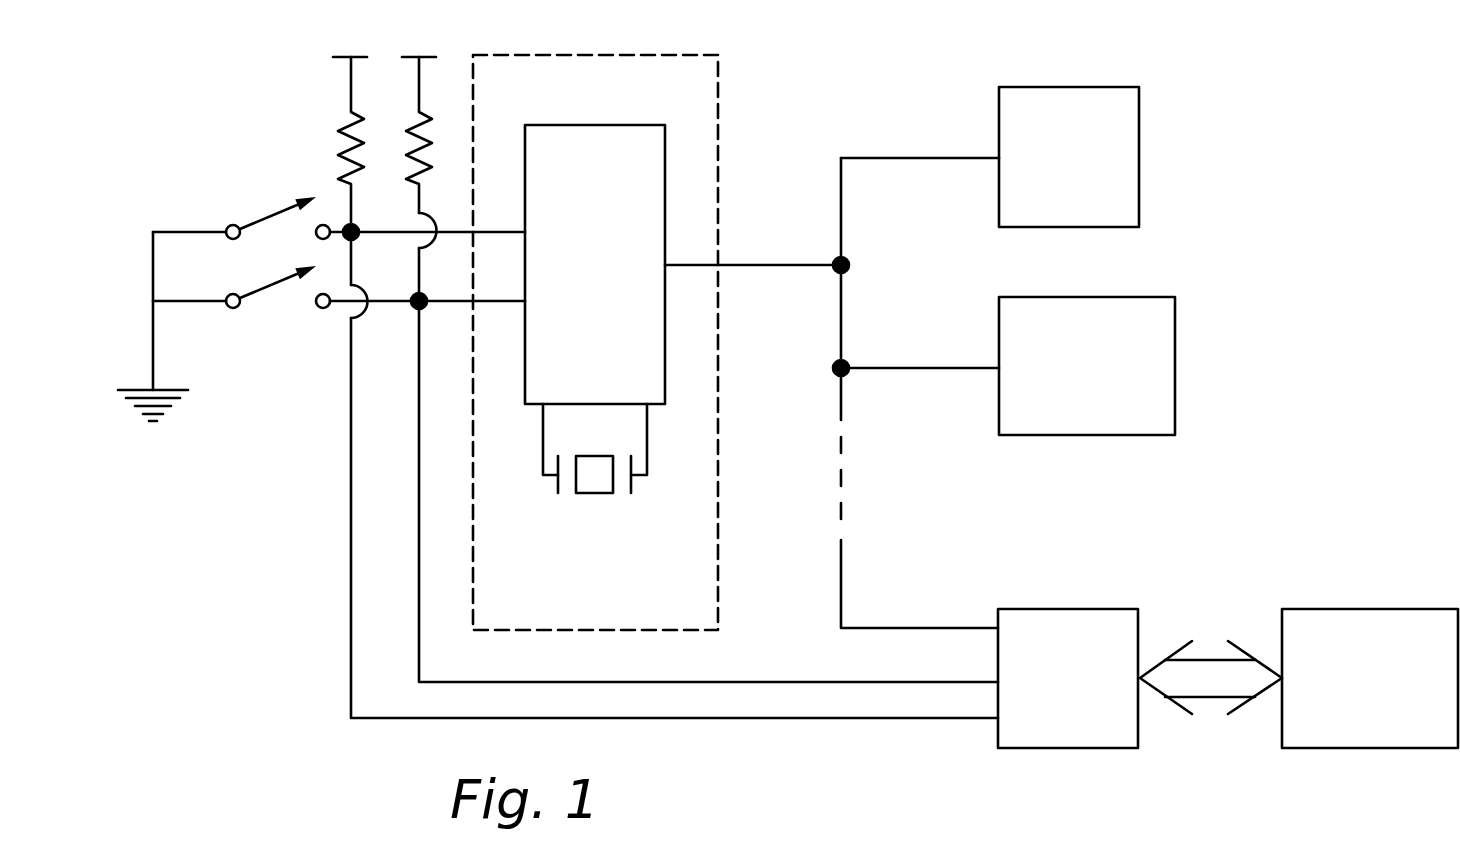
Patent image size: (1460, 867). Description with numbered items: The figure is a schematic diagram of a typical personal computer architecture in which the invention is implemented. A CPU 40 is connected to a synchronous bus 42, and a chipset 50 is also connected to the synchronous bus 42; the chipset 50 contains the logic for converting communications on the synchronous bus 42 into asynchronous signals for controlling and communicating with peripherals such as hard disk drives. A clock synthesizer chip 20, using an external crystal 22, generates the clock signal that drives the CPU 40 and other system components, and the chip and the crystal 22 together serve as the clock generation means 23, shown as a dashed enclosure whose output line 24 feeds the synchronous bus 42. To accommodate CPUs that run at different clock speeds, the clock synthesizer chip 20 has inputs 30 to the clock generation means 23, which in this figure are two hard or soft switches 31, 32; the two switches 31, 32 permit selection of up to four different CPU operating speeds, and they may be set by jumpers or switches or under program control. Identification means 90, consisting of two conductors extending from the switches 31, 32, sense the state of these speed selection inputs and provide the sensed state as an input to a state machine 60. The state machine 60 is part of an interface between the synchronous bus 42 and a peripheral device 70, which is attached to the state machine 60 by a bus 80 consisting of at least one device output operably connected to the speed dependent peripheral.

The clock synthesizer chip 20 is at (595, 264).
The external crystal 22 is at (592, 493).
The clock generation means 23 is at (553, 55).
The output signal line 24 is at (730, 265).
The inputs 30 is at (171, 172).
The switch 31 is at (263, 218).
The switch 32 is at (260, 318).
The CPU 40 is at (1141, 167).
The synchronous bus 42 is at (843, 247).
The chipset 50 is at (1178, 368).
The state machine 60 is at (1028, 609).
The peripheral device 70 is at (1332, 609).
The bus 80 is at (1208, 657).
The identification means 90 is at (415, 472).